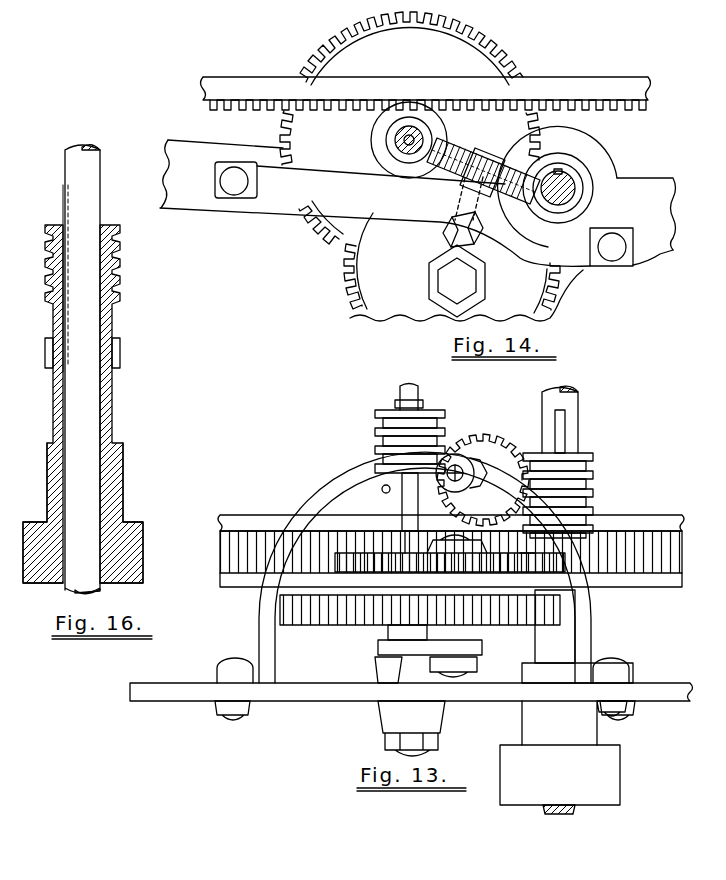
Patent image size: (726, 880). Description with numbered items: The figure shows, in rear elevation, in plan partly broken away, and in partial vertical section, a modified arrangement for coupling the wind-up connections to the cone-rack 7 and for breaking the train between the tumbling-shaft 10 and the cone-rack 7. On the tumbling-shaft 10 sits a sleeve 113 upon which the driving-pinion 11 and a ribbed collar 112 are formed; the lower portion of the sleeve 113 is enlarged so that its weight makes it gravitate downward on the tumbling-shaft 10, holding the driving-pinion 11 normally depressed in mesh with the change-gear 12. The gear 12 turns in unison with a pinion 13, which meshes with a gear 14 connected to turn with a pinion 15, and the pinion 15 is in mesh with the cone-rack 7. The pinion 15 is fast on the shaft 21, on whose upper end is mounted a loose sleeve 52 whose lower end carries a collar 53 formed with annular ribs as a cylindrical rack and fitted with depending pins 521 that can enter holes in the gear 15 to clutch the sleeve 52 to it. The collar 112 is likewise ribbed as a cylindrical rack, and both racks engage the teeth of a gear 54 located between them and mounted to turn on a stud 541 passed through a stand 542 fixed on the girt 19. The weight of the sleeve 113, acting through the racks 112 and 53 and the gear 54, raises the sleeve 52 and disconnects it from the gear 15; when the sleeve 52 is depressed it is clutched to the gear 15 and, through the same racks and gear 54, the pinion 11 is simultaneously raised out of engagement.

In FIG. 13, the cone-rack 7 is at (684, 552).
In FIG. 14, the tumbling-shaft 10 is at (564, 192).
In FIG. 16, the tumbling-shaft 10 is at (81, 369).
In FIG. 13, the tumbling-shaft 10 is at (580, 412).
In FIG. 16, the driving-pinion 11 is at (45, 355).
In FIG. 13, the driving-pinion 11 is at (560, 592).
In FIG. 14, the driven gear 12 is at (452, 265).
In FIG. 13, the driven gear 12 is at (538, 555).
In FIG. 13, the pinion 13 is at (452, 606).
In FIG. 14, the gear 14 is at (410, 128).
In FIG. 13, the gear 14 is at (336, 622).
In FIG. 13, the pinion 15 is at (402, 545).
In FIG. 13, the cross-girt 19 is at (652, 690).
In FIG. 14, the shaft 21 is at (398, 148).
In FIG. 13, the shaft 21 is at (407, 508).
In FIG. 14, the loose sleeve 52 is at (394, 133).
In FIG. 13, the loose sleeve 52 is at (396, 402).
In FIG. 13, the collar 53 is at (377, 425).
In FIG. 14, the gear 54 is at (463, 150).
In FIG. 13, the gear 54 is at (484, 426).
In FIG. 14, the collar (cylindrical rack) 112 is at (578, 162).
In FIG. 16, the collar (cylindrical rack) 112 is at (50, 265).
In FIG. 13, the collar (cylindrical rack) 112 is at (594, 470).
In FIG. 16, the sleeve 113 is at (55, 401).
In FIG. 13, the sleeve 113 is at (563, 727).
In FIG. 13, the pins or projections 521 is at (383, 487).
In FIG. 14, the stud 541 is at (476, 197).
In FIG. 13, the stud 541 is at (459, 458).
In FIG. 14, the stand 542 is at (418, 230).
In FIG. 13, the stand 542 is at (265, 646).